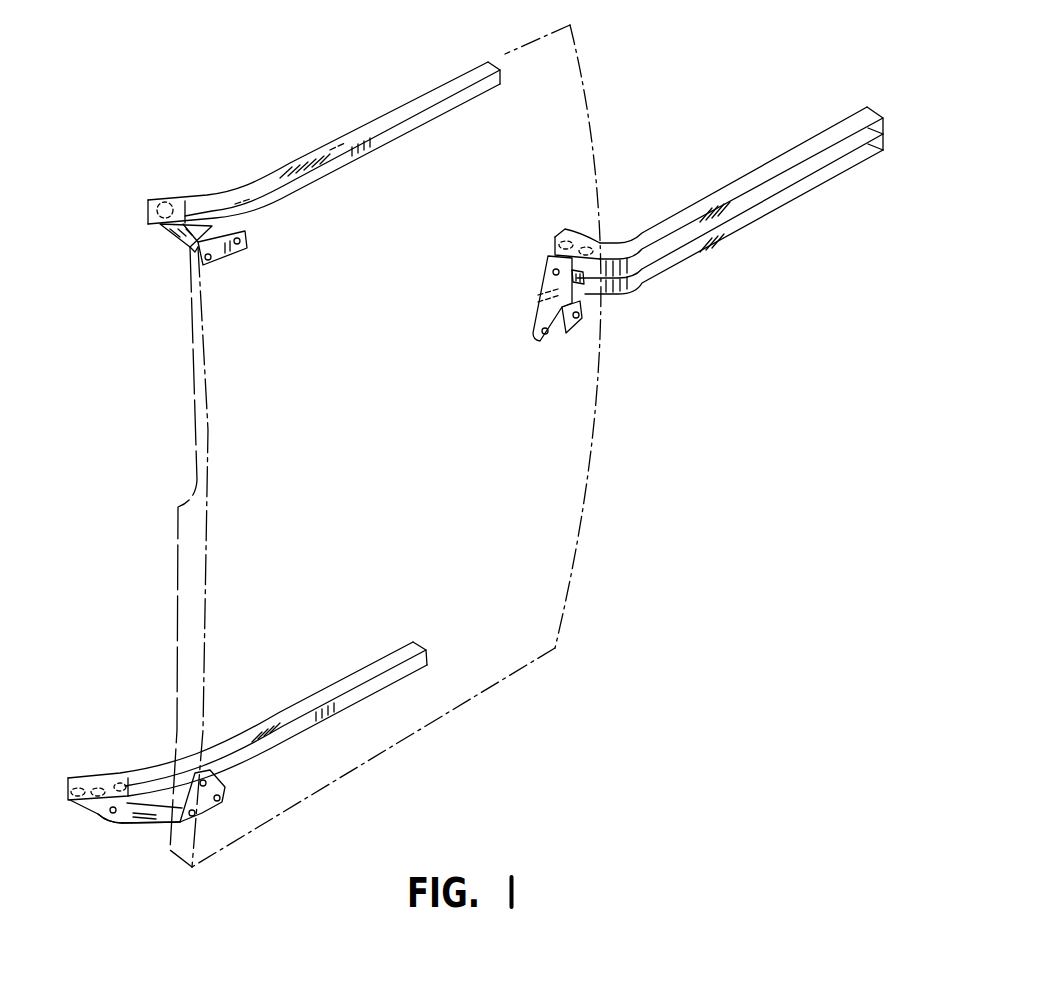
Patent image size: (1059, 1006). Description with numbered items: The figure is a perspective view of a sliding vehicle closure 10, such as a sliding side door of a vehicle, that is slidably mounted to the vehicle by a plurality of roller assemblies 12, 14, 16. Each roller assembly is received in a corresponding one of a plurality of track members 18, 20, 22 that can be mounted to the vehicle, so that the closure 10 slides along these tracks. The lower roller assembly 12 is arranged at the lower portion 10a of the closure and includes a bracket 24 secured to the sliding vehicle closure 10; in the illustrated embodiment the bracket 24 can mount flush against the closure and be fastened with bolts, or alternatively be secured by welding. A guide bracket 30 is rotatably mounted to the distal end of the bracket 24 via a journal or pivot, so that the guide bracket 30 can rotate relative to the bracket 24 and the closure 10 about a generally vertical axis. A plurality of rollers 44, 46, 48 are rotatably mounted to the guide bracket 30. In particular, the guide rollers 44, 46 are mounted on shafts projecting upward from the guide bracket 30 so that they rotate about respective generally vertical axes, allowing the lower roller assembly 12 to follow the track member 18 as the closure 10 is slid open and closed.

The sliding vehicle closure 10 is at (598, 411).
The lower portion 10a is at (226, 828).
The lower roller assembly 12 is at (101, 840).
The roller assembly 14 is at (160, 243).
The roller assembly 16 is at (538, 254).
The track member 18 is at (151, 763).
The track member 20 is at (207, 195).
The track member 22 is at (668, 268).
The bracket 24 is at (156, 833).
The guide bracket 30 is at (126, 818).
The guide roller 44 is at (118, 772).
The guide roller 46 is at (78, 772).
The roller 48 is at (101, 808).